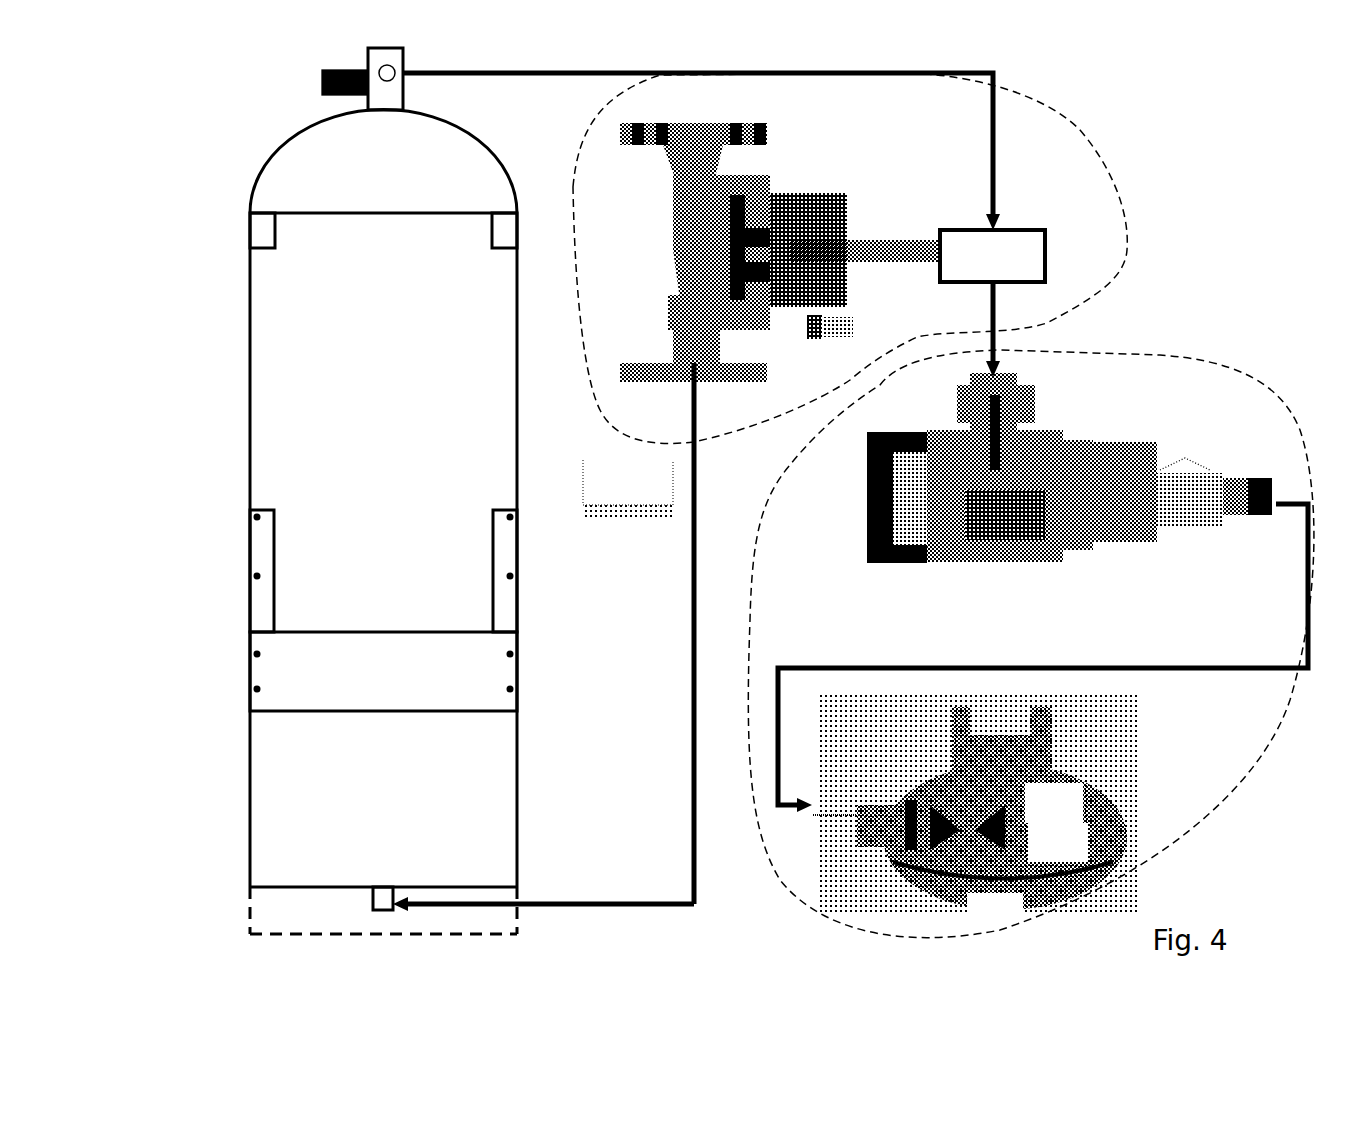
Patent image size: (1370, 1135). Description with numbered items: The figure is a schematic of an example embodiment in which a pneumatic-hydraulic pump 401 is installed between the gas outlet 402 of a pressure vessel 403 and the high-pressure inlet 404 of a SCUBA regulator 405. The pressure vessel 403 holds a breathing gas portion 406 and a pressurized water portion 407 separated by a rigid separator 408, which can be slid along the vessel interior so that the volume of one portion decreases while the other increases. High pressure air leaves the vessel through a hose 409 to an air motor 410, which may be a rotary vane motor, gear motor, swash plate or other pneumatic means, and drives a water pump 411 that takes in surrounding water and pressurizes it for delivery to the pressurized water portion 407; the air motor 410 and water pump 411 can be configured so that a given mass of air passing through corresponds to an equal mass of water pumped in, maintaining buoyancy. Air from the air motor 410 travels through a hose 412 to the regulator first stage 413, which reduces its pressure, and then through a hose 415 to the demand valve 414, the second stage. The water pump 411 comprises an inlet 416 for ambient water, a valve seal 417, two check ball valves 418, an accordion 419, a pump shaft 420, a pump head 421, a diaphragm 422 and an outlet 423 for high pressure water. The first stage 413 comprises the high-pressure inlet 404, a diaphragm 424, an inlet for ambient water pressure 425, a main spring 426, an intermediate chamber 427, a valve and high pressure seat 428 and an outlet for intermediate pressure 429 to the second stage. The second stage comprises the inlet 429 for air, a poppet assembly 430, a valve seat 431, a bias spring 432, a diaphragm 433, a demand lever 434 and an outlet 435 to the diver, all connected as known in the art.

The pneumatic-hydraulic pump 401 is at (1073, 145).
The gas outlet 402 is at (370, 67).
The pressure vessel 403 is at (232, 188).
The high-pressure inlet 404 is at (1012, 378).
The SCUBA regulator 405 is at (780, 900).
The breathing gas portion 406 is at (365, 431).
The pressurized water portion 407 is at (373, 832).
The rigid separator 408 is at (366, 685).
The hose 409 is at (997, 67).
The air motor 410 is at (1045, 255).
The water pump 411 is at (598, 142).
The hose 412 is at (997, 317).
The first stage 413 is at (1143, 387).
The demand valve 414 is at (1110, 762).
The hose 415 is at (1235, 675).
The inlet 416 is at (721, 109).
The valve seal 417 is at (653, 246).
The check ball valves 418 is at (673, 250).
The accordion 419 is at (765, 205).
The pump shaft 420 is at (792, 240).
The pump head 421 is at (660, 302).
The diaphragm 422 is at (762, 300).
The outlet 423 is at (712, 414).
The diaphragm 424 is at (920, 430).
The inlet for ambient water pressure 425 is at (872, 495).
The main spring 426 is at (880, 490).
The intermediate chamber 427 is at (985, 548).
The valve and high pressure seat 428 is at (1007, 550).
The outlet for intermediate pressure 429 is at (805, 851).
The poppet assembly 430 is at (945, 857).
The valve seat 431 is at (922, 790).
The bias spring 432 is at (1010, 806).
The diaphragm 433 is at (1025, 878).
The demand lever 434 is at (1058, 842).
The outlet 435 is at (1018, 728).